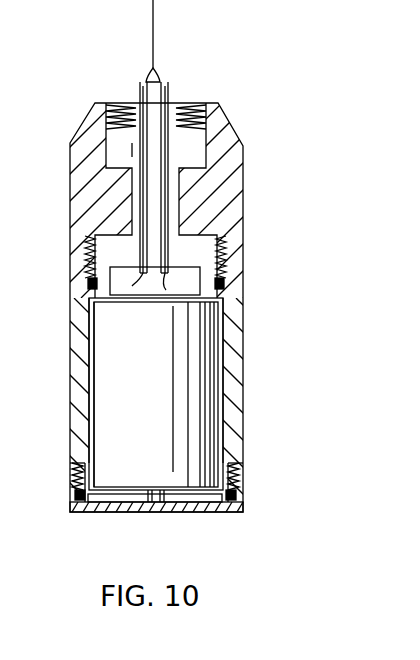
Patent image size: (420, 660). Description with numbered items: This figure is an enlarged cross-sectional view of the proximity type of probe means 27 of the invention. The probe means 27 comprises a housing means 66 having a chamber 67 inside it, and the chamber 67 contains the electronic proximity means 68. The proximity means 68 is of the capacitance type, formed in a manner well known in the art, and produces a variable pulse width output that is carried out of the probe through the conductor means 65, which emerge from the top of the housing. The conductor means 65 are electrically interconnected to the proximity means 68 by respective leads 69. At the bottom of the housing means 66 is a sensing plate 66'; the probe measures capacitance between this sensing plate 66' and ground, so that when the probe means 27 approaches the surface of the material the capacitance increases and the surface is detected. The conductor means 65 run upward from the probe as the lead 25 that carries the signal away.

The lead wire 25 is at (153, 14).
The probe means 27 is at (278, 196).
The conductor means 65 is at (143, 83).
The housing means 66 is at (210, 302).
The sensing plate 66' is at (156, 530).
The chamber 67 is at (97, 416).
The electronic proximity means 68 is at (202, 412).
The leads 69 is at (140, 140).